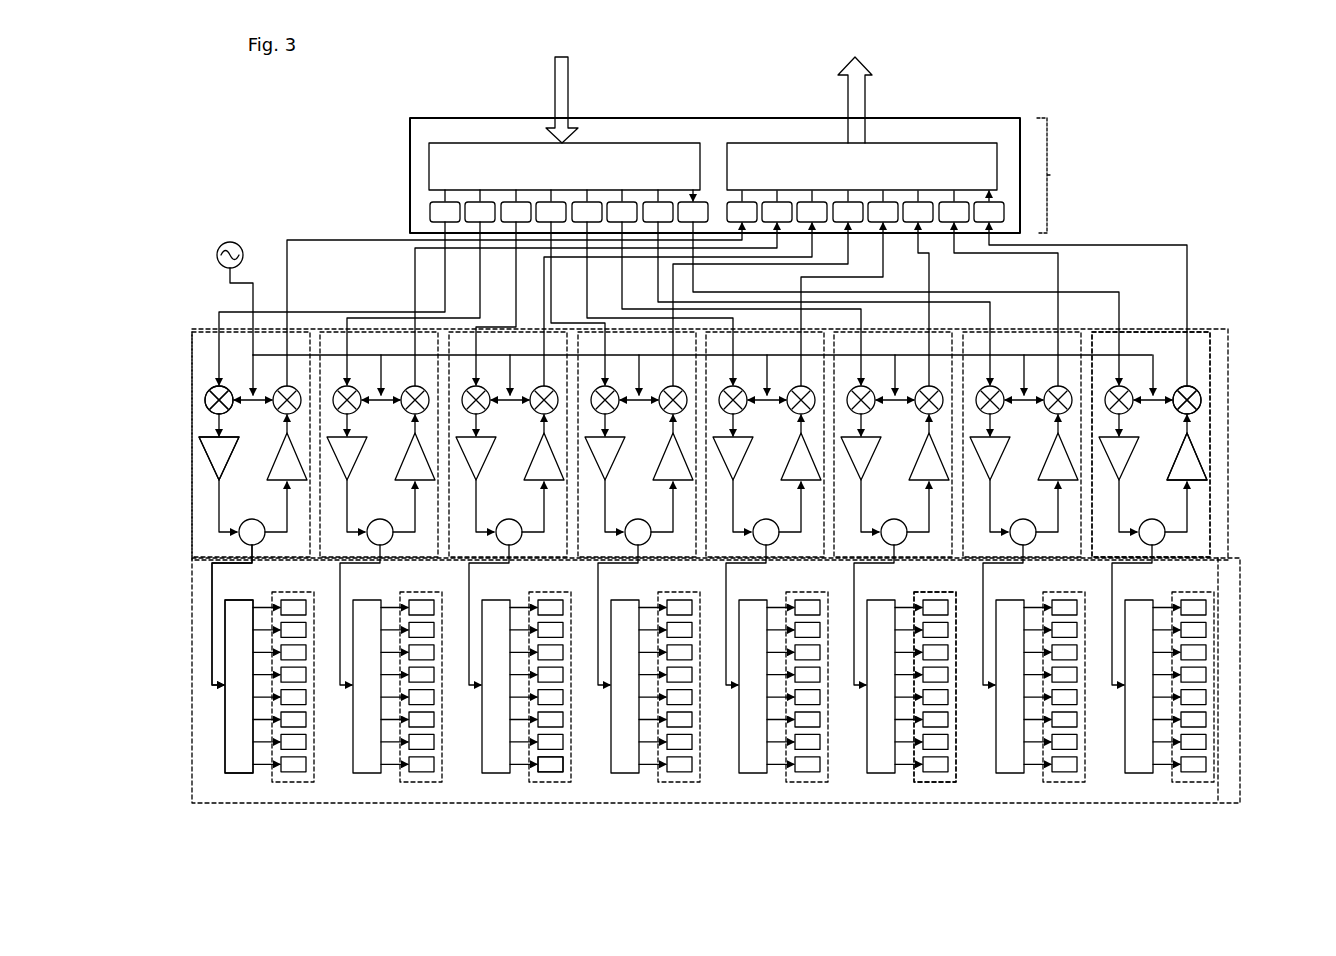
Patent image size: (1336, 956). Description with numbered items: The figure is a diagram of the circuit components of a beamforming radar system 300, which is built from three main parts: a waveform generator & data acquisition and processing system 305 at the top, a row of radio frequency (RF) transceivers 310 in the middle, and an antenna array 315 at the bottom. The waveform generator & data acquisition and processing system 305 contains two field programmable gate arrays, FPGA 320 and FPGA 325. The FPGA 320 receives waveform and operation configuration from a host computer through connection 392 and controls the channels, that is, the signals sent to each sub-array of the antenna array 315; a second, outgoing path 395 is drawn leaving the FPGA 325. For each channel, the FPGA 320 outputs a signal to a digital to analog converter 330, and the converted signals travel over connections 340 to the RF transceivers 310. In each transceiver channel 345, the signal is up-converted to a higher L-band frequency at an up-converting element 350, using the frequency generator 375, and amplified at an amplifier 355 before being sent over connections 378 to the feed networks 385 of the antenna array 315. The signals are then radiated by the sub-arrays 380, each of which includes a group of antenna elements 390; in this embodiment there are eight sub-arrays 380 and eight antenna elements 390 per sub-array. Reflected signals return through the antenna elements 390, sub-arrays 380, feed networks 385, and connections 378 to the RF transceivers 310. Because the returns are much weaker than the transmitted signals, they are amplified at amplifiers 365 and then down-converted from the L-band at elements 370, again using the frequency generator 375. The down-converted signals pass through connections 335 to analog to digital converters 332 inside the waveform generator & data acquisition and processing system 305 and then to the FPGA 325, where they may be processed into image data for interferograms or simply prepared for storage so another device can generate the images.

The beamforming radar system 300 is at (212, 176).
The waveform generator & data acquisition and processing system 305 is at (1052, 175).
The radio frequency transceivers 310 is at (1228, 447).
The antenna array 315 is at (1240, 683).
The FPGA 320 is at (451, 176).
The FPGA 325 is at (931, 176).
The digital to analog converter 330 is at (432, 212).
The analog to digital converters 332 is at (1005, 212).
The connections 335 is at (1107, 245).
The connections 340 is at (1119, 295).
The transceiver channel module 345 is at (1195, 335).
The up-converting elements 350 is at (213, 384).
The amplifiers 355 is at (218, 476).
The amplifiers 365 is at (1192, 468).
The down-converting elements 370 is at (1202, 403).
The frequency generator 375 is at (232, 242).
The connections 378 is at (214, 603).
The sub-arrays 380 is at (948, 775).
The feed networks 385 is at (242, 770).
The antenna elements 390 is at (545, 768).
The connection 392 is at (557, 85).
The receive data output 395 is at (850, 85).